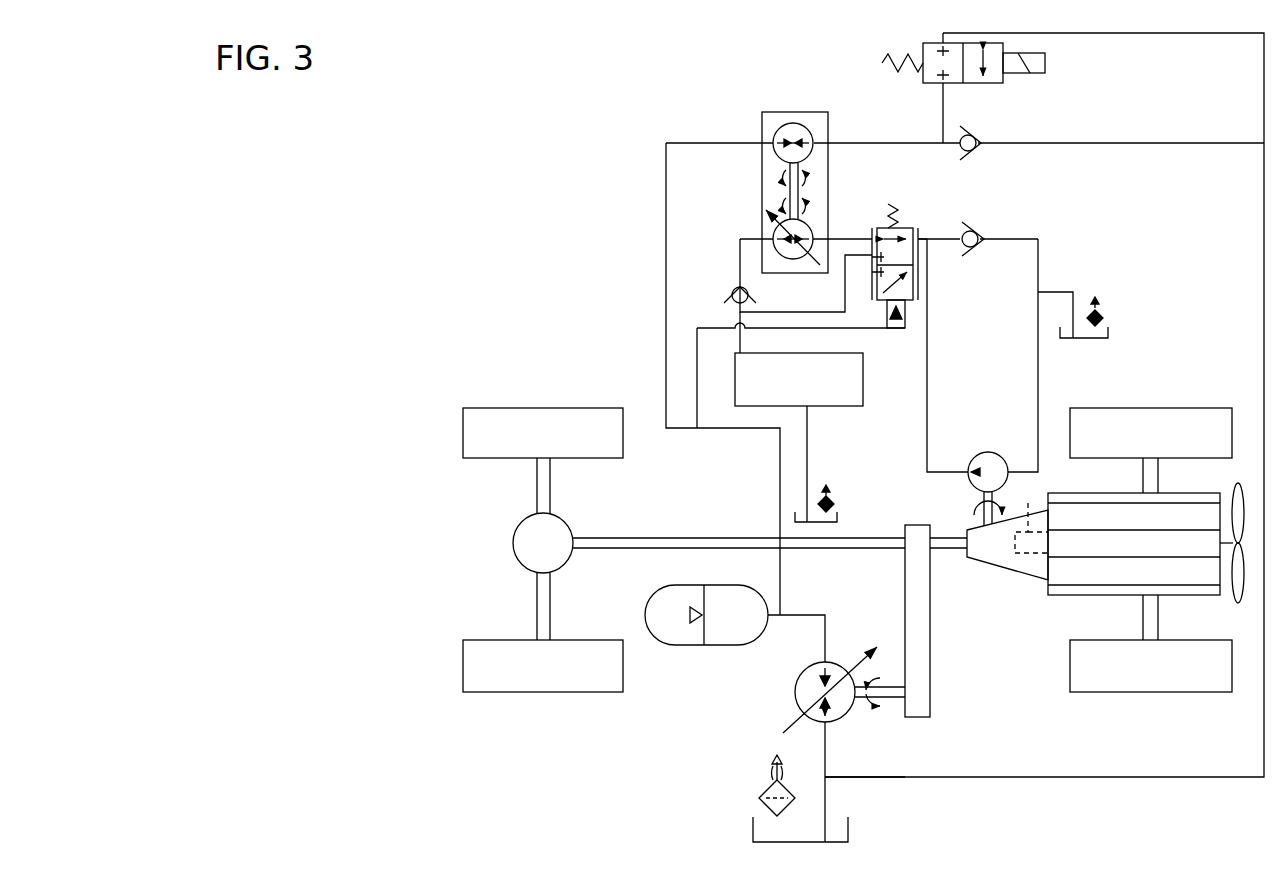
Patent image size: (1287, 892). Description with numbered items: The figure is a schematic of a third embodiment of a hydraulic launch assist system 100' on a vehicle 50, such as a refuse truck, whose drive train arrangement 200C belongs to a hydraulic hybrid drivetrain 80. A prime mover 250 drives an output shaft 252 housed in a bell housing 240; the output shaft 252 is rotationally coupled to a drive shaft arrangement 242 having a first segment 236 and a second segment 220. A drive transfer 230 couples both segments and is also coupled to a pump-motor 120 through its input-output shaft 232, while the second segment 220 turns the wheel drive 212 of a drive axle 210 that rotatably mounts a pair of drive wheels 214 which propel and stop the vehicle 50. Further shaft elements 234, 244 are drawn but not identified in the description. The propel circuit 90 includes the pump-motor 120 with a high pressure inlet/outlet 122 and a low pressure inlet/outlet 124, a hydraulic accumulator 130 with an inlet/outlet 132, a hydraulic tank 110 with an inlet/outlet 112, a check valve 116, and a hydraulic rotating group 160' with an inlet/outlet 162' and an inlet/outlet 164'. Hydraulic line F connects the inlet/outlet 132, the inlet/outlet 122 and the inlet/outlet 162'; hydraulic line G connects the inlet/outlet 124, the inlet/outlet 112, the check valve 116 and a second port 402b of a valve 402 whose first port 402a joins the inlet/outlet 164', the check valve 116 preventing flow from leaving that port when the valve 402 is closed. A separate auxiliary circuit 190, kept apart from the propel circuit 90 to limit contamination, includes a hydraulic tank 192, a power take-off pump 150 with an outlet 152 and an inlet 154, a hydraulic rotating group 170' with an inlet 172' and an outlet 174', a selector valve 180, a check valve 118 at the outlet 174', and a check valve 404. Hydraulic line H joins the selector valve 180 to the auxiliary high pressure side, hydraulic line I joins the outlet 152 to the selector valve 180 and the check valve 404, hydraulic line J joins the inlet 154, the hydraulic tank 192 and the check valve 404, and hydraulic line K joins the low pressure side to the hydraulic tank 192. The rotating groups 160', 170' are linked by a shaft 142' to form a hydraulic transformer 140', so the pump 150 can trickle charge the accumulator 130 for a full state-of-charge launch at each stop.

The vehicle 50 is at (393, 481).
The hydraulic hybrid drivetrain 80 is at (625, 748).
The propel circuit 90 is at (800, 613).
The HLA system 100' is at (873, 405).
The hydraulic tank 110 is at (752, 830).
The inlet/outlet 112 is at (830, 815).
The check valve 116 is at (978, 148).
The check valve 118 is at (735, 286).
The pump-motor 120 is at (803, 729).
The high pressure inlet/outlet 122 is at (826, 661).
The low pressure inlet/outlet 124 is at (822, 736).
The hydraulic accumulator 130 is at (670, 615).
The inlet/outlet 132 is at (770, 617).
The hydraulic transformer 140' is at (788, 193).
The shaft 142' is at (839, 191).
The hydraulic pump 150 is at (986, 440).
The outlet 152 is at (950, 472).
The inlet 154 is at (1025, 472).
The hydraulic rotating group 160' is at (727, 169).
The inlet/outlet 162' is at (747, 135).
The inlet/outlet 164' is at (875, 120).
The hydraulic rotating group 170' is at (796, 258).
The inlet 172' is at (811, 218).
The outlet 174' is at (786, 287).
The selector valve 180 is at (908, 228).
The auxiliary circuit 190 is at (840, 393).
The hydraulic tank 192 is at (1106, 332).
The drive train arrangement 200C is at (457, 187).
The drive axle 210 is at (535, 605).
The wheel drive 212 is at (575, 545).
The drive wheels 214 is at (547, 418).
The second segment 220 is at (680, 538).
The drive transfer 230 is at (925, 665).
The input-output shaft 232 is at (900, 700).
The transmission output shaft 234 is at (902, 548).
The first segment 236 is at (933, 550).
The housing 240 is at (1020, 567).
The drive shaft arrangement 242 is at (963, 543).
The pump drive shaft 244 is at (980, 513).
The prime mover 250 is at (1065, 597).
The output shaft 252 is at (1031, 517).
The valve 402 is at (954, 78).
The first port 402a is at (945, 93).
The second port 402b is at (943, 43).
The check valve 404 is at (992, 232).
The hydraulic line F is at (686, 428).
The hydraulic line G is at (1082, 777).
The hydraulic line H is at (849, 288).
The hydraulic line I is at (930, 322).
The hydraulic line J is at (1035, 331).
The hydraulic line K is at (812, 462).